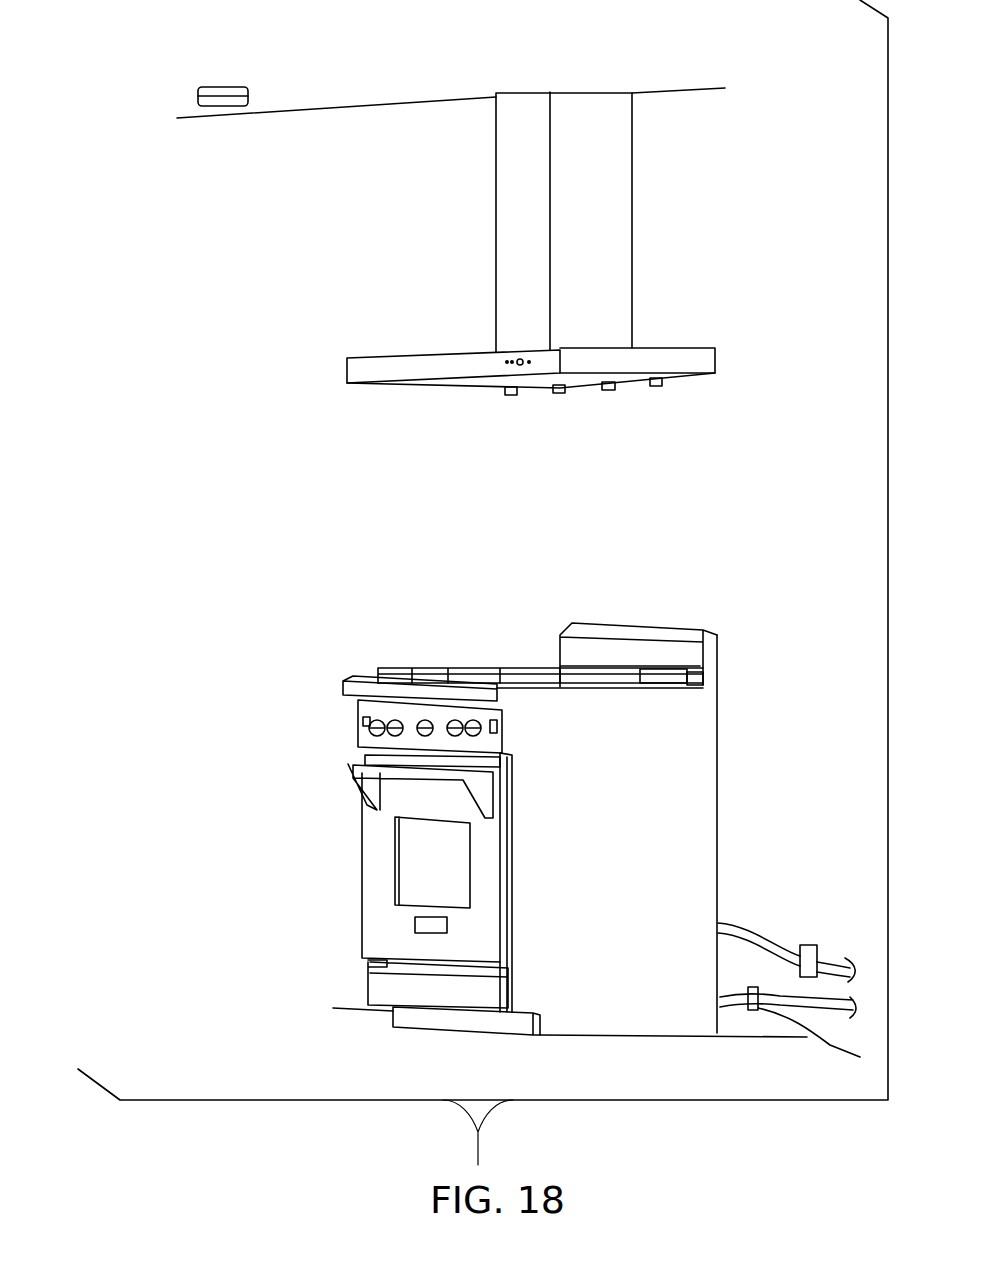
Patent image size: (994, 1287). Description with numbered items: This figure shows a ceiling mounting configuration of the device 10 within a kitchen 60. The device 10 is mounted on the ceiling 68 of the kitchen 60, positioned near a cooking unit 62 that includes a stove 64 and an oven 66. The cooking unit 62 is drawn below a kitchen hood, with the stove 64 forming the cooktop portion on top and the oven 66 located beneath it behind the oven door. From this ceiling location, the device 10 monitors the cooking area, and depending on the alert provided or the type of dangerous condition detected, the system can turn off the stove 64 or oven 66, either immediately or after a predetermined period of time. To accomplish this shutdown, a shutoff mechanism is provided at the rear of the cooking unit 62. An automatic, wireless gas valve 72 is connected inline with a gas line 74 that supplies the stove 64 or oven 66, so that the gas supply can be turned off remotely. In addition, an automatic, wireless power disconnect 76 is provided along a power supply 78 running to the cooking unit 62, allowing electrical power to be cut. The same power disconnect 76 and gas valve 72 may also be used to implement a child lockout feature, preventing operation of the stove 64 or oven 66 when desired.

The device 10 is at (236, 80).
The ceiling 68 is at (396, 99).
The kitchen 60 is at (766, 384).
The cooking unit 62 is at (708, 808).
The stove 64 is at (372, 680).
The oven 66 is at (423, 862).
The gas valve 72 is at (810, 945).
The gas line 74 is at (828, 962).
The power supply 78 is at (813, 998).
The power disconnect 76 is at (825, 1039).